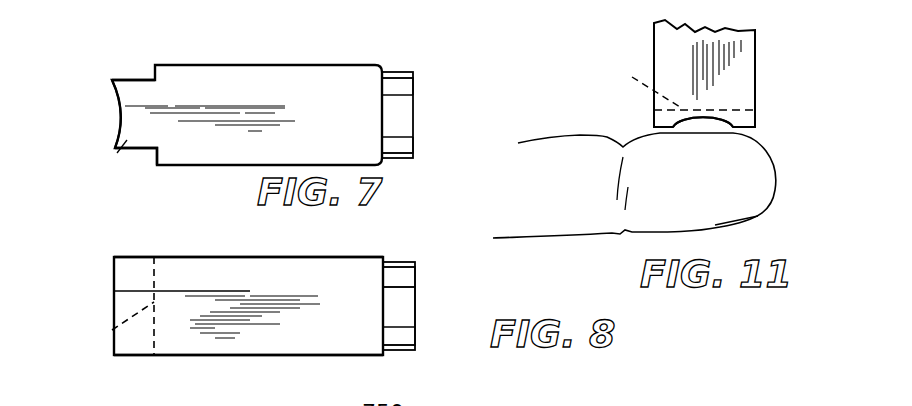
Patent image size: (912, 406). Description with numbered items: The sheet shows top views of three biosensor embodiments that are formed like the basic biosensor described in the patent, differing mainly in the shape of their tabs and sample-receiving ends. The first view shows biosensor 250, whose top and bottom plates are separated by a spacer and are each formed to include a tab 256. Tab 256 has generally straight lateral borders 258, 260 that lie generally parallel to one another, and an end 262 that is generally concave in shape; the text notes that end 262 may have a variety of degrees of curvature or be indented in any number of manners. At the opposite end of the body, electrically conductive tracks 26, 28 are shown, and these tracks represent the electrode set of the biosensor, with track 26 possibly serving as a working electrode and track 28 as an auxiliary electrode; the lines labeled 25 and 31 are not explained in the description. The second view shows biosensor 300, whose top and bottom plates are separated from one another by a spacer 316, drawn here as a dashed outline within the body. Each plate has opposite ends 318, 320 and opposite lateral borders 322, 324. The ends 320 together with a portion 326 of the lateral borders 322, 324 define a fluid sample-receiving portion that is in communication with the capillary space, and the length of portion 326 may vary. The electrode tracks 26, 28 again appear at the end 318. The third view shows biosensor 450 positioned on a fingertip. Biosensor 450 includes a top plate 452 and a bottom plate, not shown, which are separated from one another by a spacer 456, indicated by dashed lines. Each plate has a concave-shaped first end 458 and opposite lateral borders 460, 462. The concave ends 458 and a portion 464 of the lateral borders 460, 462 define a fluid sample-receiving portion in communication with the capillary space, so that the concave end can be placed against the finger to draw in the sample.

In FIG. 7, the biosensor 250 is at (355, 56).
In FIG. 7, the lateral border 260 is at (137, 78).
In FIG. 7, the end 262 is at (118, 98).
In FIG. 7, the tab 256 is at (119, 161).
In FIG. 7, the lateral border 258 is at (143, 150).
In FIG. 7, the body / contact element 25 is at (320, 80).
In FIG. 7, the electrically conductive track 26 is at (415, 88).
In FIG. 8, the electrically conductive track 26 is at (405, 278).
In FIG. 7, the electrically conductive track 28 is at (412, 147).
In FIG. 8, the electrically conductive track 28 is at (401, 337).
In FIG. 8, the biosensor 300 is at (372, 252).
In FIG. 8, the lateral border 324 is at (247, 257).
In FIG. 8, the lateral border 322 is at (240, 357).
In FIG. 8, the end 320 is at (114, 283).
In FIG. 8, the portion of lateral borders 326 is at (128, 257).
In FIG. 8, the spacer 316 is at (112, 330).
In FIG. 8, the body / connector element 31 is at (320, 267).
In FIG. 8, the end 318 is at (390, 300).
In FIG. 11, the biosensor 450 is at (640, 60).
In FIG. 11, the top plate 452 is at (748, 97).
In FIG. 11, the lateral border 462 is at (773, 113).
In FIG. 11, the spacer 456 is at (628, 82).
In FIG. 11, the lateral border 460 is at (653, 110).
In FIG. 11, the portion of lateral borders 464 is at (653, 120).
In FIG. 11, the concave-shaped first end 458 is at (720, 118).